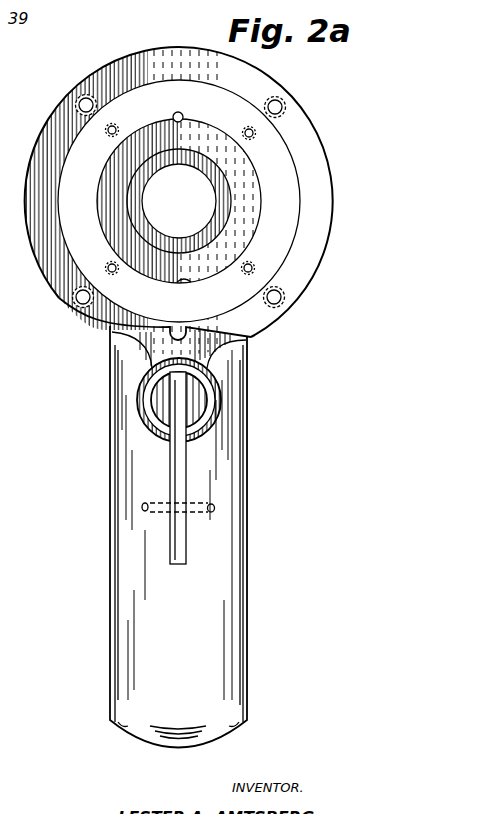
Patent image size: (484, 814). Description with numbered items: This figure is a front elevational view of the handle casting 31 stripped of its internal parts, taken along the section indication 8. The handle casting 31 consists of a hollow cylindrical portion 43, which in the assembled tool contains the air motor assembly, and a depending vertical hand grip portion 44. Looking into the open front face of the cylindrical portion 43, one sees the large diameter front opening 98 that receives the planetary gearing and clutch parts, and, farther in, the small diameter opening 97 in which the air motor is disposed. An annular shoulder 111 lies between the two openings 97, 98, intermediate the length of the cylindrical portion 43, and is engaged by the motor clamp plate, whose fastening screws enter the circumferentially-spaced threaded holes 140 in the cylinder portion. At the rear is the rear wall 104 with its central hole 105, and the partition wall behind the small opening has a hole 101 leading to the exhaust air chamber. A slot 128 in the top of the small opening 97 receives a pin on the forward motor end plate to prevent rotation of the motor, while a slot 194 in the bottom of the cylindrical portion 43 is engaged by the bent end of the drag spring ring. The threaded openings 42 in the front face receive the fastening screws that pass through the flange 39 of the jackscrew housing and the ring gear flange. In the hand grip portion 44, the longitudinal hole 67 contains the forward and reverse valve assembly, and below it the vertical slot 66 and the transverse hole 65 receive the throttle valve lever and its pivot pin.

The section line 8 is at (178, 26).
The handle casting 31 is at (110, 478).
The flange 39 is at (7, 14).
The threaded openings 42 is at (81, 99).
The hollow cylindrical portion 43 is at (312, 264).
The hand grip portion 44 is at (140, 633).
The hole 65 is at (216, 509).
The vertical slot 66 is at (186, 468).
The hole 67 is at (199, 393).
The small diameter opening 97 is at (200, 281).
The large diameter front opening 98 is at (258, 333).
The hole 101 is at (201, 243).
The rear wall 104 is at (158, 167).
The central hole 105 is at (149, 216).
The annular shoulder 111 is at (128, 292).
The slot 128 is at (185, 122).
The threaded holes 140 is at (115, 126).
The slot 194 is at (107, 340).